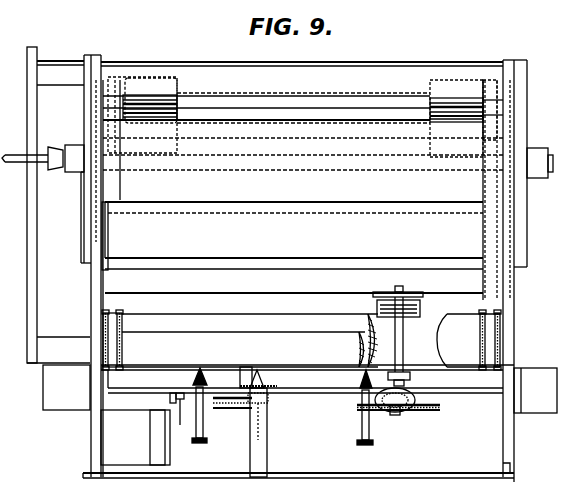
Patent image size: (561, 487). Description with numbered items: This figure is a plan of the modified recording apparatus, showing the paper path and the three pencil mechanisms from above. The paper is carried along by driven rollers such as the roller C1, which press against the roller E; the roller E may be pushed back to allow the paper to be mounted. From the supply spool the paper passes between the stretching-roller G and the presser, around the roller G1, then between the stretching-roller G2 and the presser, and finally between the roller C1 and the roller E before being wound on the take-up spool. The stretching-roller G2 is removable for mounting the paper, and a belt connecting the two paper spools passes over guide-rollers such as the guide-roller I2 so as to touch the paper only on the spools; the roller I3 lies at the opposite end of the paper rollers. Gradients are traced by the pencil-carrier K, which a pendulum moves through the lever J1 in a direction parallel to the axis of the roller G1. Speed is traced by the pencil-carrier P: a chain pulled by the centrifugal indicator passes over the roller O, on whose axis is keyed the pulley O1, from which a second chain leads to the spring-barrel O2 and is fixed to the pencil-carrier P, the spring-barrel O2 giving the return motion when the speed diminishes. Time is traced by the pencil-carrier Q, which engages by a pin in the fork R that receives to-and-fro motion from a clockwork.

The roller E is at (152, 100).
The roller C1 is at (168, 108).
The stretching-roller G is at (248, 268).
The roller G1 is at (310, 316).
The stretching-roller G2 is at (354, 250).
The inner roller I3 is at (130, 316).
The guide-roller I2 is at (480, 328).
The roller O is at (405, 317).
The pulley O1 is at (415, 412).
The spring-barrel O2 is at (217, 400).
The lever J1 is at (175, 416).
The pencil-carrier K is at (203, 402).
The pencil-carrier P is at (266, 425).
The pencil-carrier Q is at (369, 405).
The fork R is at (398, 415).